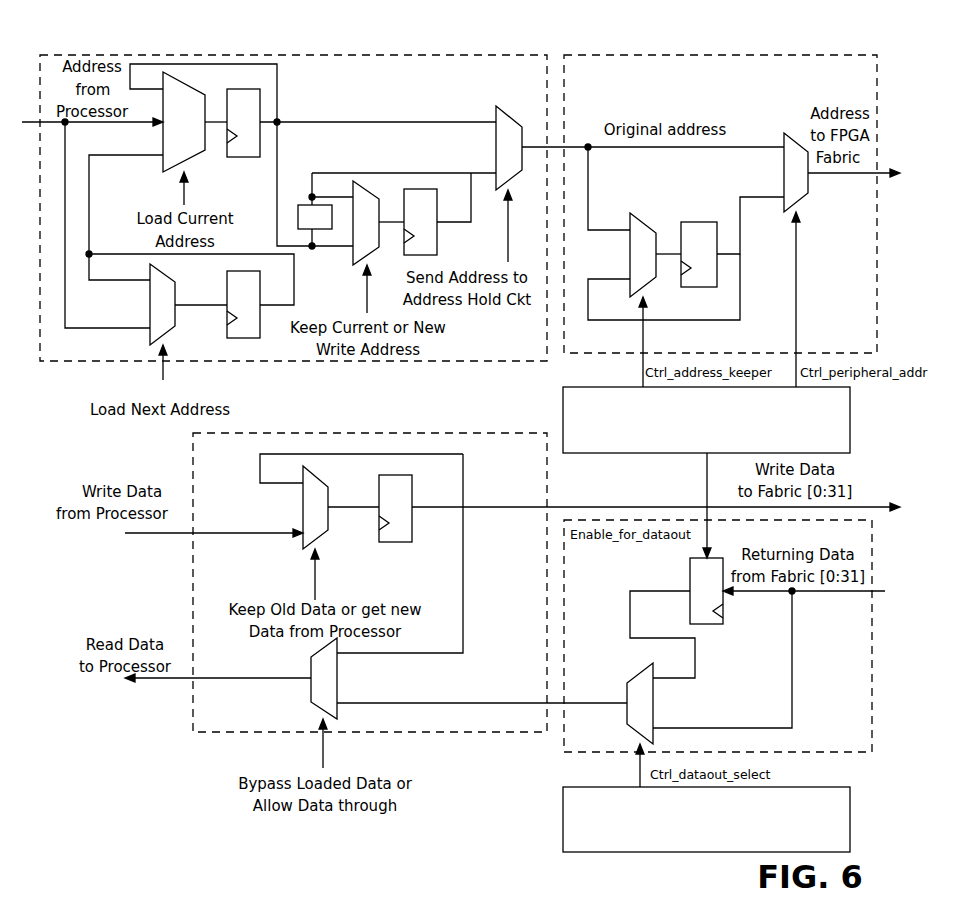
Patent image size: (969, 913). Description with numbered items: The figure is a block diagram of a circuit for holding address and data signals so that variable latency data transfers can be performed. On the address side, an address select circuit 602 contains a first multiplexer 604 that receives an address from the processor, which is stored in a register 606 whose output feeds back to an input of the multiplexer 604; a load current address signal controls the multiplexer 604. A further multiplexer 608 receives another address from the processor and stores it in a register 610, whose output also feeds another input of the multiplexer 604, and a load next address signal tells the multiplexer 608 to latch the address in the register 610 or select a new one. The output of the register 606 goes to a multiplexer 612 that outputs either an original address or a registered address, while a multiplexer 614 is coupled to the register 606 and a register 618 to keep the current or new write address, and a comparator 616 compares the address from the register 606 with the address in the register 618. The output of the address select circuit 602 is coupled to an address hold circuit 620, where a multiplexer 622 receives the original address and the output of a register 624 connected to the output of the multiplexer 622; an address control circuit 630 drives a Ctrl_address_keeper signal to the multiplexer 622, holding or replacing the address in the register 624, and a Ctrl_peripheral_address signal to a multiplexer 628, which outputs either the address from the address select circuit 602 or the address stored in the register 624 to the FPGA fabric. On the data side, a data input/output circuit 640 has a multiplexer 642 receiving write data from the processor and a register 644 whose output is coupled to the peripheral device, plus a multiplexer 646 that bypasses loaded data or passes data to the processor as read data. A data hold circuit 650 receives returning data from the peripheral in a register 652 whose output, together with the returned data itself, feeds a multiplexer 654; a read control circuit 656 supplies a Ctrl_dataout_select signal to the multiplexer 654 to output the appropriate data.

The address select circuit 602 is at (393, 58).
The first multiplexer 604 is at (192, 88).
The register 606 is at (250, 89).
The multiplexer 608 is at (177, 306).
The register 610 is at (227, 300).
The multiplexer 612 is at (496, 114).
The multiplexer 614 is at (362, 200).
The comparator 616 is at (298, 213).
The register 618 is at (418, 189).
The address hold circuit 620 is at (795, 57).
The multiplexer 622 is at (656, 226).
The register 624 is at (708, 222).
The multiplexer 628 is at (784, 140).
The address control circuit 630 is at (850, 436).
The data input/output circuit 640 is at (480, 416).
The multiplexer 642 is at (318, 476).
The register 644 is at (402, 475).
The multiplexer 646 is at (311, 671).
The data hold circuit 650 is at (870, 662).
The register 652 is at (690, 582).
The multiplexer 654 is at (630, 668).
The read control circuit 656 is at (850, 803).